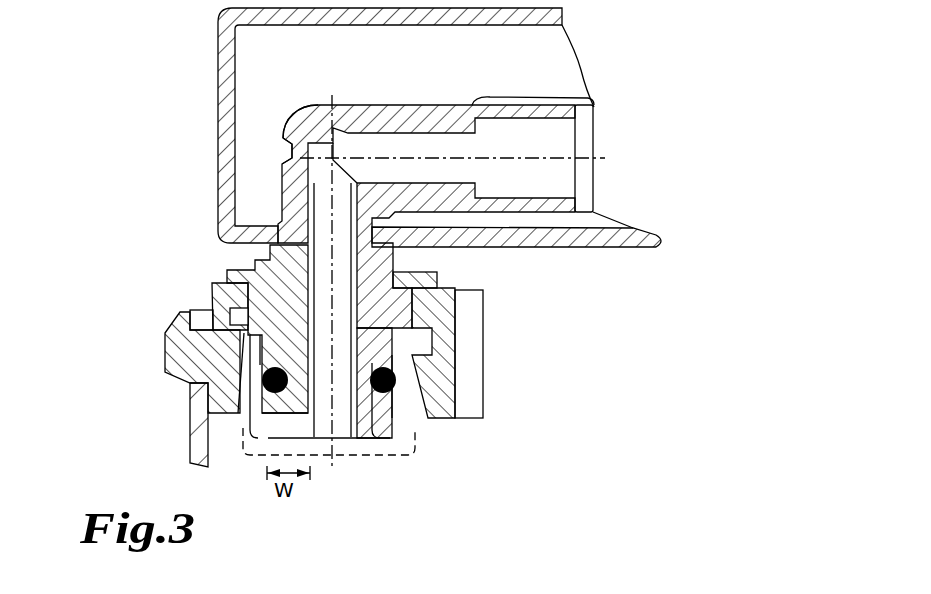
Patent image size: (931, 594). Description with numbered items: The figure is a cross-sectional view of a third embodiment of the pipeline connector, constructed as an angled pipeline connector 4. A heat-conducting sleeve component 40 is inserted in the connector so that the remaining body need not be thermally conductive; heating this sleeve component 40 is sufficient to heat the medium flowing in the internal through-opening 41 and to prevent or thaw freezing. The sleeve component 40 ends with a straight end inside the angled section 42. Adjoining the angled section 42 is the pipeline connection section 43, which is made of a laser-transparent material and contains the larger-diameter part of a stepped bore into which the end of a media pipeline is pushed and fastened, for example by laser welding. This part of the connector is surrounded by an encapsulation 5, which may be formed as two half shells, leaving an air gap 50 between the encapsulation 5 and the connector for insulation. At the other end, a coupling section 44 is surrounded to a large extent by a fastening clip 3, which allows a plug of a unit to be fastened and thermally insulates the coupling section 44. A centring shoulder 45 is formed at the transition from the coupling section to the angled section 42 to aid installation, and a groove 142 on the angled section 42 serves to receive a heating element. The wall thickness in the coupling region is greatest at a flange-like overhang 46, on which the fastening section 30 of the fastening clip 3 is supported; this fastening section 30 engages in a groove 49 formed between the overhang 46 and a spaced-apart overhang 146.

The fastening clip 3 is at (187, 359).
The angled pipeline connector 4 is at (260, 210).
The encapsulation 5 is at (218, 45).
The fastening section 30 is at (208, 279).
The heat-conducting sleeve component 40 is at (318, 300).
The internal through-opening 41 is at (212, 309).
The angled section 42 is at (270, 133).
The pipeline connection section 43 is at (532, 93).
The coupling section 44 is at (404, 345).
The centring shoulder 45 is at (283, 233).
The flange-like overhang 46 is at (433, 283).
The groove 49 is at (440, 299).
The air gap 50 is at (272, 80).
The groove 142 is at (276, 155).
The overhang 146 is at (440, 321).